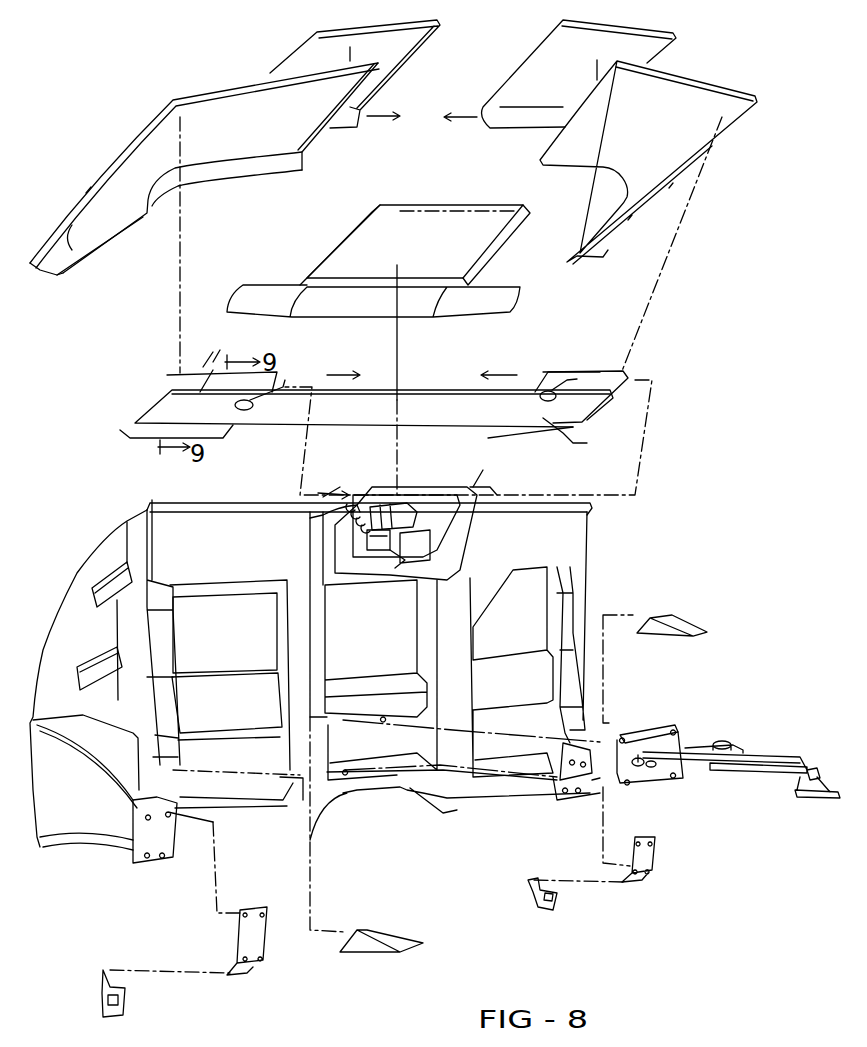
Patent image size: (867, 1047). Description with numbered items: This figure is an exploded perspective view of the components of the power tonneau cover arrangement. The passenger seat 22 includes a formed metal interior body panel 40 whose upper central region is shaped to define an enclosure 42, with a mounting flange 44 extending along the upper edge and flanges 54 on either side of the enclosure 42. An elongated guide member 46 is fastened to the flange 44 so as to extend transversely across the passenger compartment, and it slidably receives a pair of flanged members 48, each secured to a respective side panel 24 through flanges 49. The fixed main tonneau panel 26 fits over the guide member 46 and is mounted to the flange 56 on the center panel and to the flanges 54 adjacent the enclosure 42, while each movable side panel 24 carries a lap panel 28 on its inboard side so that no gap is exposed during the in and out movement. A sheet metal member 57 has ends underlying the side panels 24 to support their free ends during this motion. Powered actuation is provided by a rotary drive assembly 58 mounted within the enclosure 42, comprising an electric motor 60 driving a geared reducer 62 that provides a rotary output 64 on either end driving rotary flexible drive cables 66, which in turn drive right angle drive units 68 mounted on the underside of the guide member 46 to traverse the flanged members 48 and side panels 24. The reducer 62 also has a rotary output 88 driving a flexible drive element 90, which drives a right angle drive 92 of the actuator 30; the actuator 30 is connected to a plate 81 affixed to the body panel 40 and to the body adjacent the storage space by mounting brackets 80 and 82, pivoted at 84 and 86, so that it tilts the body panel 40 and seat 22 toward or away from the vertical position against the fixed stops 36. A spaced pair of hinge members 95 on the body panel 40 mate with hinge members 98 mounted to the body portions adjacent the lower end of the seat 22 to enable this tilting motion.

The passenger seat 22 is at (126, 518).
The side panel 24 is at (292, 119).
The main tonneau panel 26 is at (465, 254).
The lap panel 28 is at (405, 54).
The actuator 30 is at (746, 770).
The fixed stops 36 is at (668, 620).
The interior body panel 40 is at (195, 557).
The enclosure 42 is at (330, 530).
The mounting flange 44 is at (240, 490).
The elongated guide member 46 is at (493, 421).
The flanged member 48 is at (176, 377).
The flange 49 is at (552, 452).
The flange 54 is at (323, 497).
The flange 56 is at (335, 250).
The sheet metal member 57 is at (268, 285).
The rotary drive assembly 58 is at (428, 506).
The electric motor 60 is at (412, 555).
The geared reducer 62 is at (361, 541).
The rotary output 64 is at (388, 498).
The rotary flexible drive cable 66 is at (318, 493).
The right angle drive unit 68 is at (243, 412).
The mounting bracket 80 is at (632, 755).
The plate 81 is at (655, 730).
The mounting bracket 82 is at (805, 795).
The pivot 84 is at (647, 773).
The pivot 86 is at (812, 768).
The rotary output 88 is at (373, 553).
The flexible drive element 90 is at (310, 518).
The right angle drive 92 is at (727, 742).
The hinge member 95 is at (240, 940).
The mating hinge member 98 is at (125, 998).